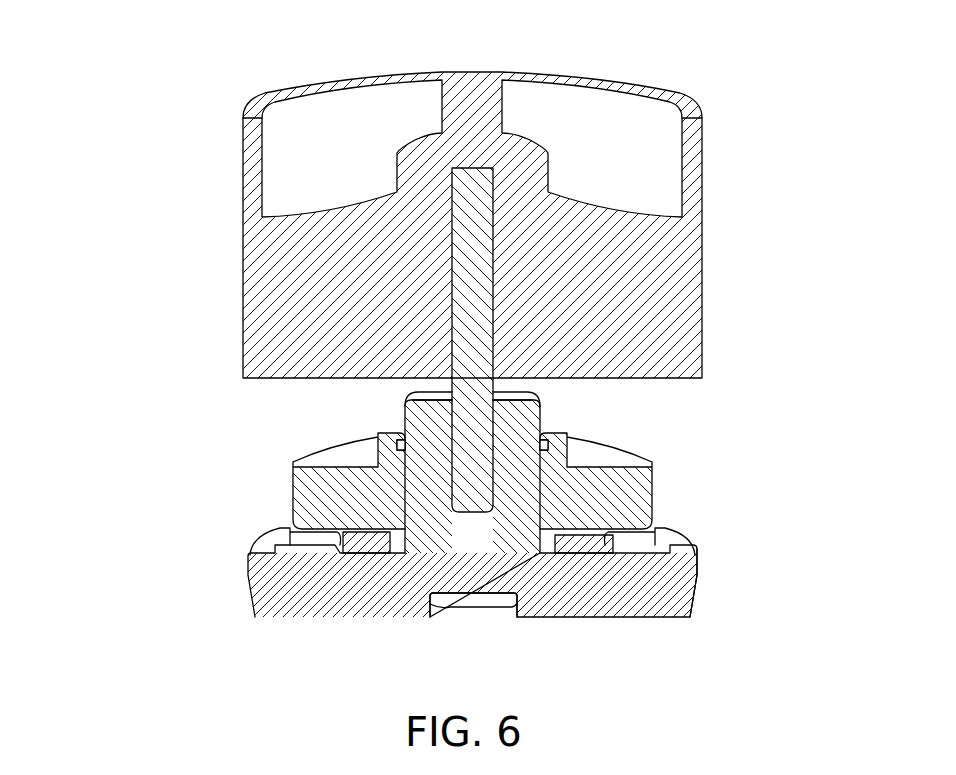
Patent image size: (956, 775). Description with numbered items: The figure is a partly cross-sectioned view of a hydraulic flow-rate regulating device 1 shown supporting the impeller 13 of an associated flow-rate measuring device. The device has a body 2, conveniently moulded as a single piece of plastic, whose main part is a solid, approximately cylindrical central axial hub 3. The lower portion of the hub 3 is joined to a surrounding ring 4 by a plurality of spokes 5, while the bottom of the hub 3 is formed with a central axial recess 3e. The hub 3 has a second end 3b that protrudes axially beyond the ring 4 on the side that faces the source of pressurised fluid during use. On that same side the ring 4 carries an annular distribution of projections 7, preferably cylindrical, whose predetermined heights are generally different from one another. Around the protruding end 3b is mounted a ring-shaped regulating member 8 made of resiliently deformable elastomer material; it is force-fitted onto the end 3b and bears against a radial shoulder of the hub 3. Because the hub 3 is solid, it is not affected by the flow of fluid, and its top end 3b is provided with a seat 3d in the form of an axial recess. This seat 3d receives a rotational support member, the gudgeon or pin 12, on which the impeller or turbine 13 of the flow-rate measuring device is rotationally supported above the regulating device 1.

The hydraulic flow-rate regulating device 1 is at (272, 440).
The body 2 is at (235, 603).
The central axial hub 3 is at (556, 418).
The second end of the hub 3b is at (405, 412).
The seat 3d is at (430, 405).
The central axial recess 3e is at (440, 600).
The ring 4 is at (673, 600).
The spokes 5 is at (357, 583).
The projections 7 is at (295, 527).
The ring-shaped regulating member 8 is at (290, 460).
The pin 12 is at (552, 408).
The impeller 13 is at (234, 167).